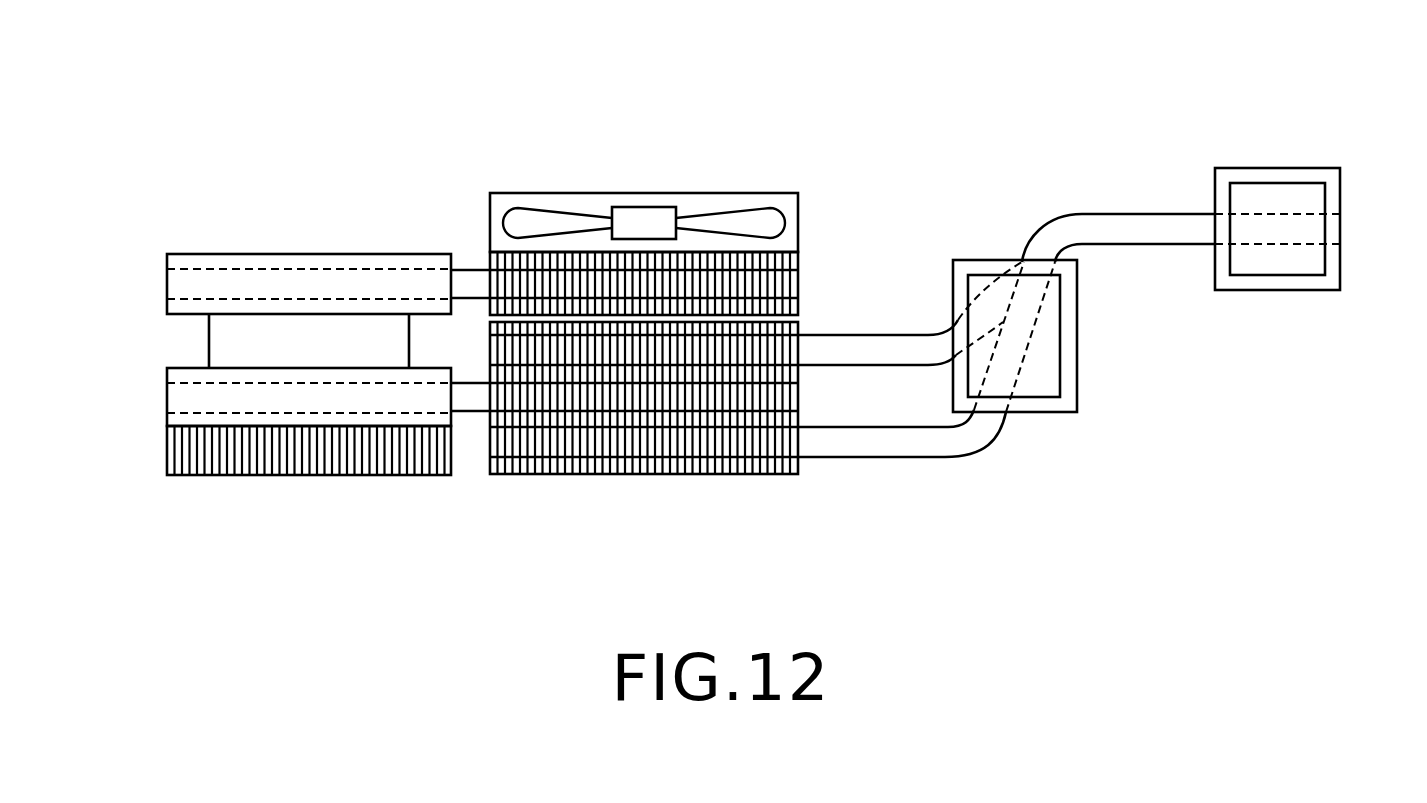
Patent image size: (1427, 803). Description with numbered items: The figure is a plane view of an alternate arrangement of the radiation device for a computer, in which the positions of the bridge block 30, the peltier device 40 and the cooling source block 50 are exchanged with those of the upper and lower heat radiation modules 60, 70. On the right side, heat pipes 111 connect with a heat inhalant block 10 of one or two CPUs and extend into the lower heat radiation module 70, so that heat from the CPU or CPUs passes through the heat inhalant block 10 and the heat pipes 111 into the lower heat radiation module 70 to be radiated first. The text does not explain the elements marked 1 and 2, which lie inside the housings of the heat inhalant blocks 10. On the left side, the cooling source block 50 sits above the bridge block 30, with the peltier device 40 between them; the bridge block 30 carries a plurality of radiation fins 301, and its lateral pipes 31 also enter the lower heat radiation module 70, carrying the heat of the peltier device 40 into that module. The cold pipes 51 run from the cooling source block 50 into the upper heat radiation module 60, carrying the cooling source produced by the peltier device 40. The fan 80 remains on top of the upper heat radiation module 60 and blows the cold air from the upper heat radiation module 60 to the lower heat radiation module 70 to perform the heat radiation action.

The first heat generating component 1 is at (1285, 198).
The second heat generating component 2 is at (1050, 372).
The heat inhalant block 10 is at (975, 265).
The bridge block 30 is at (200, 420).
The radiation fins 301 is at (200, 476).
The lateral pipes 31 is at (467, 397).
The peltier device 40 is at (224, 350).
The cooling source block 50 is at (201, 258).
The cold pipes 51 is at (478, 278).
The upper heat radiation module 60 is at (800, 278).
The lower heat radiation module 70 is at (648, 478).
The fan 80 is at (527, 198).
The heat pipes 111 is at (892, 348).